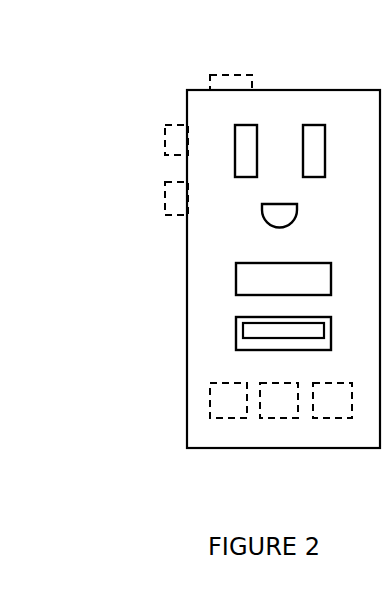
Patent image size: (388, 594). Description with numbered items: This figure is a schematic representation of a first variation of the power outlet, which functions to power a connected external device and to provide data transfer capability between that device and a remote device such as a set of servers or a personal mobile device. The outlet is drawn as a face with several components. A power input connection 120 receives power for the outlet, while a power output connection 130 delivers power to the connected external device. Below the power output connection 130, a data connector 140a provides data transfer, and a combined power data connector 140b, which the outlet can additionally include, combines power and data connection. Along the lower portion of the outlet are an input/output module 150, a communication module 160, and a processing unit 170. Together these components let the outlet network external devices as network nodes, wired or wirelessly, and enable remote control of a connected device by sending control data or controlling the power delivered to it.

The power input connection 120 is at (196, 86).
The power output connection 130 is at (296, 113).
The data connector 140a is at (235, 288).
The combined power data connector 140b is at (223, 352).
The input/output module 150 is at (222, 420).
The communication module 160 is at (278, 420).
The processing unit 170 is at (335, 420).